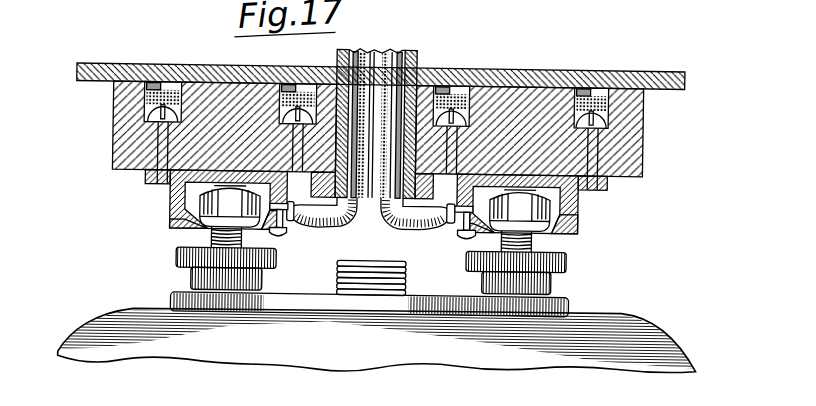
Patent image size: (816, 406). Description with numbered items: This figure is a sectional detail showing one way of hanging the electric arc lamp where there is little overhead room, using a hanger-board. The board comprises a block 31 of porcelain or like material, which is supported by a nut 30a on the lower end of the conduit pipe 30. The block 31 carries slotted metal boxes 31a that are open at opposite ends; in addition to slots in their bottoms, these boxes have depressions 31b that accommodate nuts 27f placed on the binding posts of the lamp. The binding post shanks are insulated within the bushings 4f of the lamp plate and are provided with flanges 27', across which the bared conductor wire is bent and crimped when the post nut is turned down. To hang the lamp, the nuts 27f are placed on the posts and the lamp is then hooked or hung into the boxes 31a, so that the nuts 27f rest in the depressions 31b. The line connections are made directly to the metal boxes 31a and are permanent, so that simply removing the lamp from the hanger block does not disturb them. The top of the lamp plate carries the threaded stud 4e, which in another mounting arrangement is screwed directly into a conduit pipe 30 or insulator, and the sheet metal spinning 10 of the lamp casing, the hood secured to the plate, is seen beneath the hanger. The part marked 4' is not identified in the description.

The sheet metal spinning 10 is at (645, 328).
The clamping bar 4' is at (369, 282).
The threaded stud 4e is at (376, 261).
The bushings 4f is at (258, 280).
The flanges 27' is at (372, 236).
The nuts 27f is at (601, 220).
The conduit pipe 30 is at (408, 73).
The nut 30a is at (424, 214).
The block 31 is at (522, 98).
The slotted metal boxes 31a is at (589, 200).
The depressions 31b is at (562, 239).